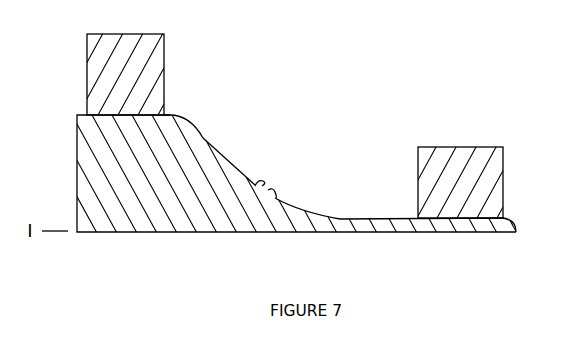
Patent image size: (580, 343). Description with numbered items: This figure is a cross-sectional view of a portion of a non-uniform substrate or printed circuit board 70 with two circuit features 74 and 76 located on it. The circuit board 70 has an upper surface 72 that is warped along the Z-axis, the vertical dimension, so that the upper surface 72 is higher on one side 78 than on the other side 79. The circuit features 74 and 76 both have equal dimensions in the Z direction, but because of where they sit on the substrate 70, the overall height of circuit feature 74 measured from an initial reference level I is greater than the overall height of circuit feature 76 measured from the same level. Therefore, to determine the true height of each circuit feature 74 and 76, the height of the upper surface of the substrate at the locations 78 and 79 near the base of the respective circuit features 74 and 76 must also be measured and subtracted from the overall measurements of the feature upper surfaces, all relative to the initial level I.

The printed circuit board 70 is at (237, 215).
The upper surface 72 is at (290, 198).
The circuit feature 74 is at (163, 82).
The circuit feature 76 is at (455, 147).
The higher side of upper surface 78 is at (167, 115).
The lower side of upper surface 79 is at (408, 217).